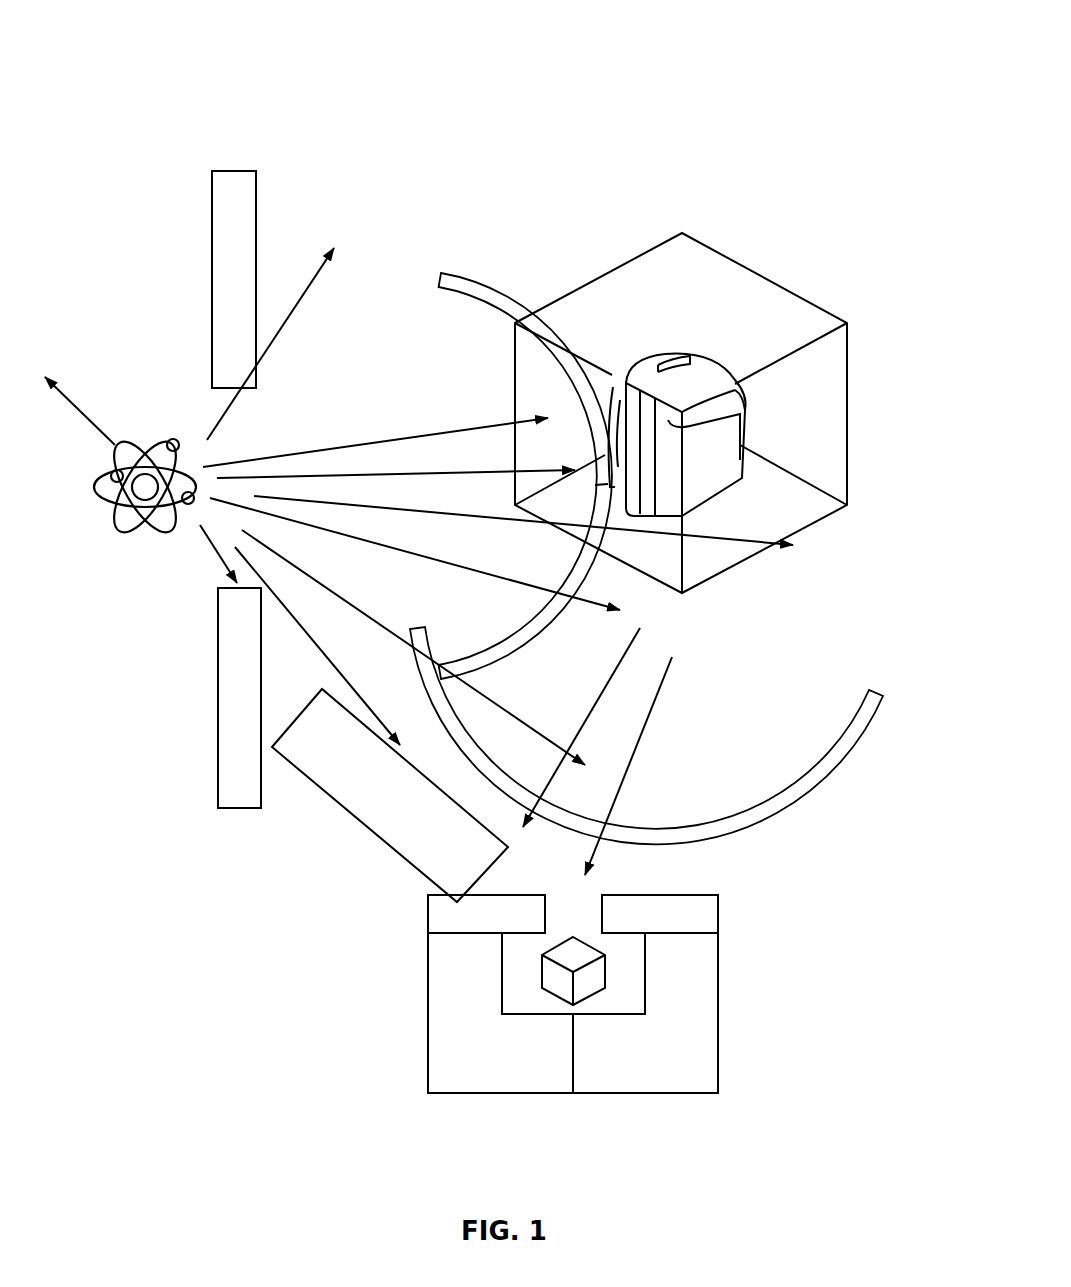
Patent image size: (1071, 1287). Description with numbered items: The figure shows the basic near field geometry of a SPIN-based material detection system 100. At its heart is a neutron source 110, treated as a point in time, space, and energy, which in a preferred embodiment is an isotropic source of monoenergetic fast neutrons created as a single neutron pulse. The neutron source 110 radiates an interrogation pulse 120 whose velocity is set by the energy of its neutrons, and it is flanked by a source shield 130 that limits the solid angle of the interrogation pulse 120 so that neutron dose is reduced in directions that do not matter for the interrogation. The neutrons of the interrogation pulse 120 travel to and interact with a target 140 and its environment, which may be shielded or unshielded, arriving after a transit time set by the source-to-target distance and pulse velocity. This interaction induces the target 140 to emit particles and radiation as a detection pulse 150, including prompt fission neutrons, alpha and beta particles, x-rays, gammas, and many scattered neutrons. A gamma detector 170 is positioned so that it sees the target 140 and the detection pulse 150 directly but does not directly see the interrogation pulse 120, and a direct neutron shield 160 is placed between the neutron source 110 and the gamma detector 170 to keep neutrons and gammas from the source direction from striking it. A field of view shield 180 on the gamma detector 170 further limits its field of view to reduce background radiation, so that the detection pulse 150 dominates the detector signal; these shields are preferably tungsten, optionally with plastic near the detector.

The SPIN-based material detection system 100 is at (138, 63).
The neutron source 110 is at (147, 425).
The interrogation pulse 120 is at (468, 277).
The source shield 130 is at (211, 218).
The target 140 is at (763, 278).
The detection pulse 150 is at (853, 762).
The direct neutron shield 160 is at (367, 825).
The gamma detector 170 is at (718, 1013).
The field of view shield 180 is at (718, 913).